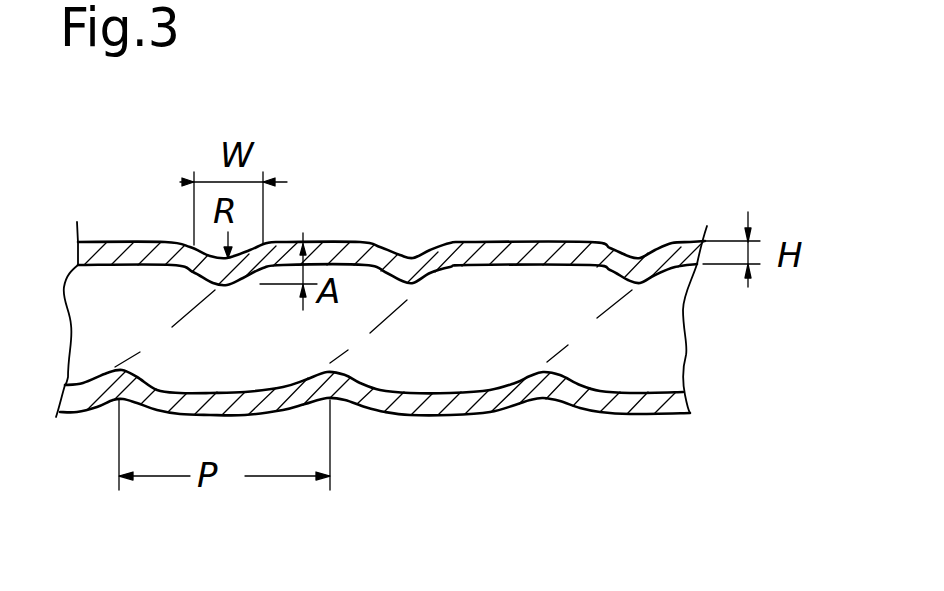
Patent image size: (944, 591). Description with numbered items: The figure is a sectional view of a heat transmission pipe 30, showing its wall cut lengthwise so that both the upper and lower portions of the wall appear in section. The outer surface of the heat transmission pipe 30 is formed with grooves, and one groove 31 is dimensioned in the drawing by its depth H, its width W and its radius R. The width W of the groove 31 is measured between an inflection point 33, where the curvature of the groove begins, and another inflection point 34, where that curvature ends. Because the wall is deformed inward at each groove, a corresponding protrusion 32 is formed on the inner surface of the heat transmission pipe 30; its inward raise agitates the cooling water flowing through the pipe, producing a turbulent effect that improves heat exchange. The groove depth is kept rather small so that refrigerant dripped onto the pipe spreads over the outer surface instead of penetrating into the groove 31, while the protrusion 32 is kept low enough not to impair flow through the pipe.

The heat transmission pipe 30 is at (163, 242).
The groove 31 is at (640, 254).
The protrusion 32 is at (434, 268).
The inflection point 33 is at (190, 243).
The inflection point 34 is at (265, 243).